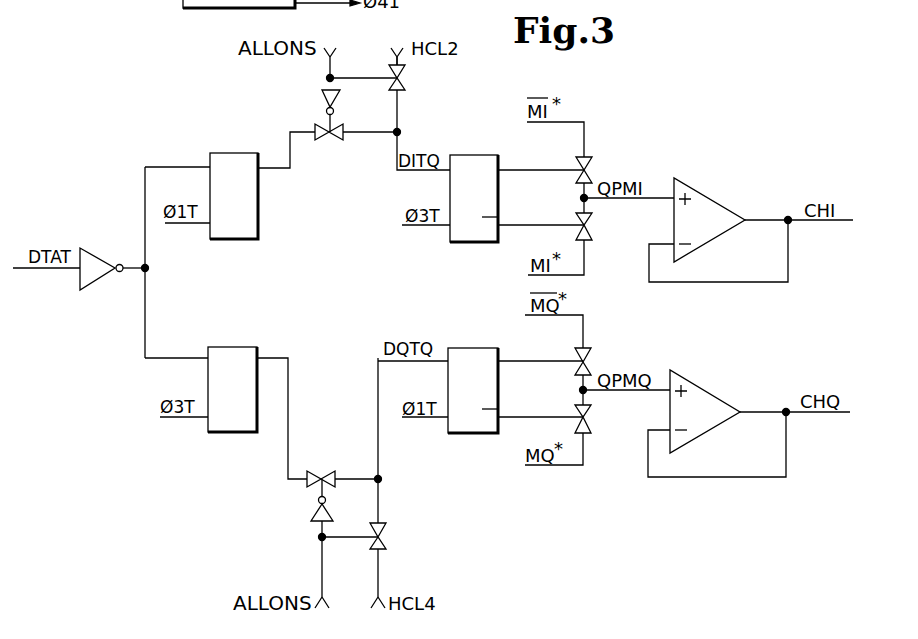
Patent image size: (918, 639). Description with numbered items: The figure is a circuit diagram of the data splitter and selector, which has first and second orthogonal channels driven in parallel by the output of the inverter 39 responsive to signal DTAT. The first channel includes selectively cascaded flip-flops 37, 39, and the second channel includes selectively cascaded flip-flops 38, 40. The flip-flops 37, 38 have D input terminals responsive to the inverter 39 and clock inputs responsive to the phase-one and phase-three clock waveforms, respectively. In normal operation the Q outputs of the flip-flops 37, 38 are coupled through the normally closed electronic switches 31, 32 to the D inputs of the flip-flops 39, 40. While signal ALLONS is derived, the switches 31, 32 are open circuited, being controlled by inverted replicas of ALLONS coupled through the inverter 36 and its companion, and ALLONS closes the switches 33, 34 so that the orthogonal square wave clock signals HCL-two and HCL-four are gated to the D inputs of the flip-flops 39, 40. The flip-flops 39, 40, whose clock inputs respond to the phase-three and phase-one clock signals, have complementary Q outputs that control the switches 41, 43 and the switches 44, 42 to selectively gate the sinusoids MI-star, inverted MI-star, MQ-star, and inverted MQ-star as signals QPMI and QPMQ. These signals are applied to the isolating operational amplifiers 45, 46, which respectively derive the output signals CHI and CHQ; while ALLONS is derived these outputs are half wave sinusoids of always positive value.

The electronic switch 31 is at (335, 141).
The electronic switch 32 is at (332, 472).
The switch 33 is at (407, 88).
The switch 34 is at (385, 547).
The inverter 36 is at (322, 100).
The flip-flop 37 is at (233, 153).
The flip-flop 38 is at (246, 347).
The inverter / flip-flop 39 is at (93, 258).
The flip-flop 40 is at (482, 348).
The switch 41 is at (590, 163).
The switch 42 is at (588, 428).
The switch 43 is at (592, 233).
The switch 44 is at (587, 353).
The isolating operational amplifier 45 is at (712, 200).
The isolating operational amplifier 46 is at (699, 385).